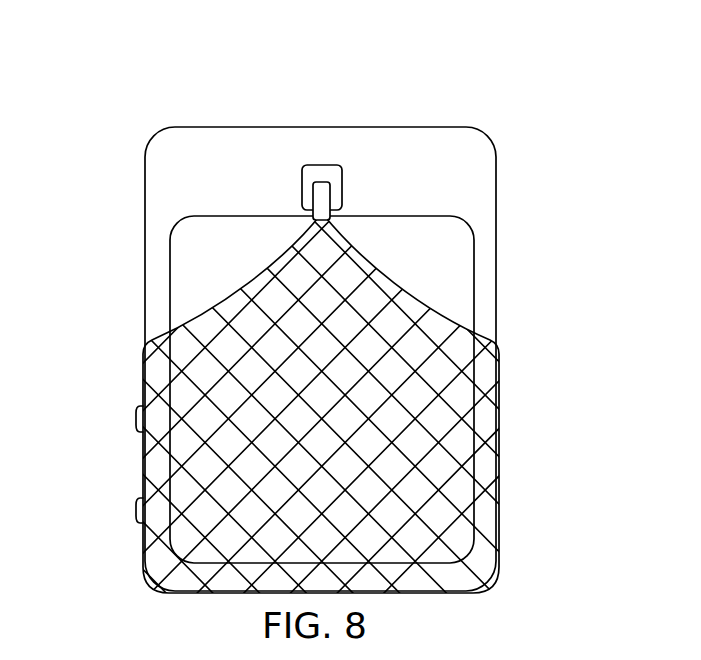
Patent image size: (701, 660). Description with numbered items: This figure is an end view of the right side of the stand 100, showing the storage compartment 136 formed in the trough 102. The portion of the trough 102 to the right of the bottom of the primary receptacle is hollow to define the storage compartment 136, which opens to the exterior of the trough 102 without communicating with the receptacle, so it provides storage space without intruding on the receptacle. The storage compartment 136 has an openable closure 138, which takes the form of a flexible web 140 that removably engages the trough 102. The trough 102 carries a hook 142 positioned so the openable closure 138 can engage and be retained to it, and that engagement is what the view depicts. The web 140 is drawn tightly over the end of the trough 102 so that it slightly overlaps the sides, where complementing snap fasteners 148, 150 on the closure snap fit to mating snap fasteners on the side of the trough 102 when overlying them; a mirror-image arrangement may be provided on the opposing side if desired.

The stand 100 is at (388, 67).
The trough 102 is at (320, 112).
The storage compartment 136 is at (172, 268).
The openable closure 138 is at (97, 358).
The flexible web 140 is at (475, 482).
The hook 142 is at (353, 180).
The complementing snap fastener 148 is at (137, 415).
The complementing snap fastener 150 is at (137, 512).